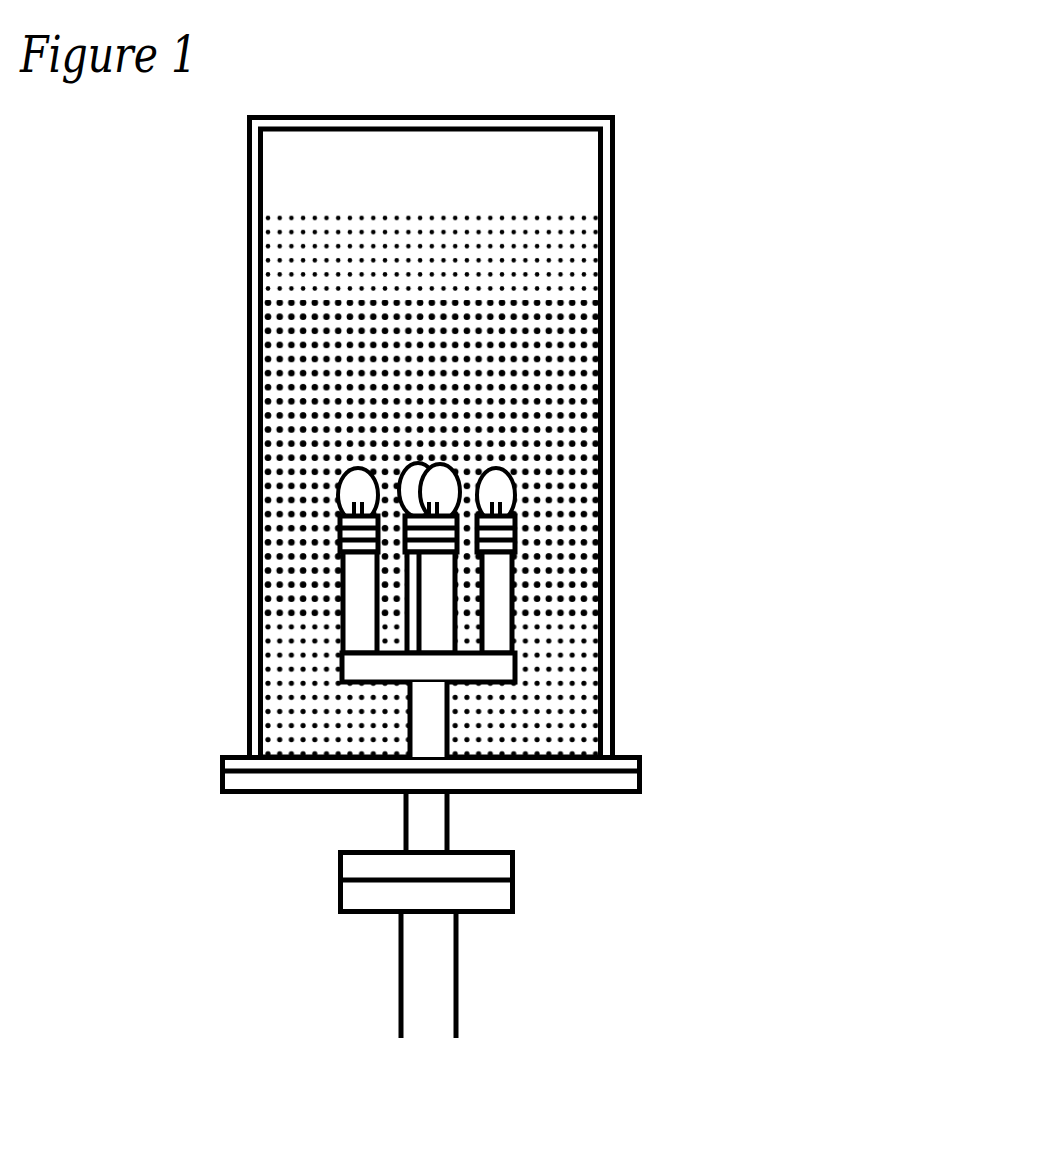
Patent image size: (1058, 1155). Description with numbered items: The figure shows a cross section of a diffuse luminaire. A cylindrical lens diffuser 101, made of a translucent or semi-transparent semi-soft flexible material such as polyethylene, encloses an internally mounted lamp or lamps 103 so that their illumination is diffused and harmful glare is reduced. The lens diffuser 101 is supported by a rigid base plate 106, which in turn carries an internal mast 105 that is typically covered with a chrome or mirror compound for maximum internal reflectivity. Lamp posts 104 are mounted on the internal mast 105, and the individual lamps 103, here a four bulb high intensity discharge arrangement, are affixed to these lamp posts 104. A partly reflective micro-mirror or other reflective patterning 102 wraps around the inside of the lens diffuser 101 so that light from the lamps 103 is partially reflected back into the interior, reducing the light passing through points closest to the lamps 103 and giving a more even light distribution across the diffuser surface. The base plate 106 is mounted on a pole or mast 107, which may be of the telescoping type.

The lens diffuser 101 is at (650, 143).
The reflective patterning 102 is at (558, 318).
The lamp 103 is at (549, 489).
The lamp post 104 is at (526, 591).
The internal mast 105 is at (460, 703).
The base plate 106 is at (460, 830).
The pole 107 is at (460, 973).